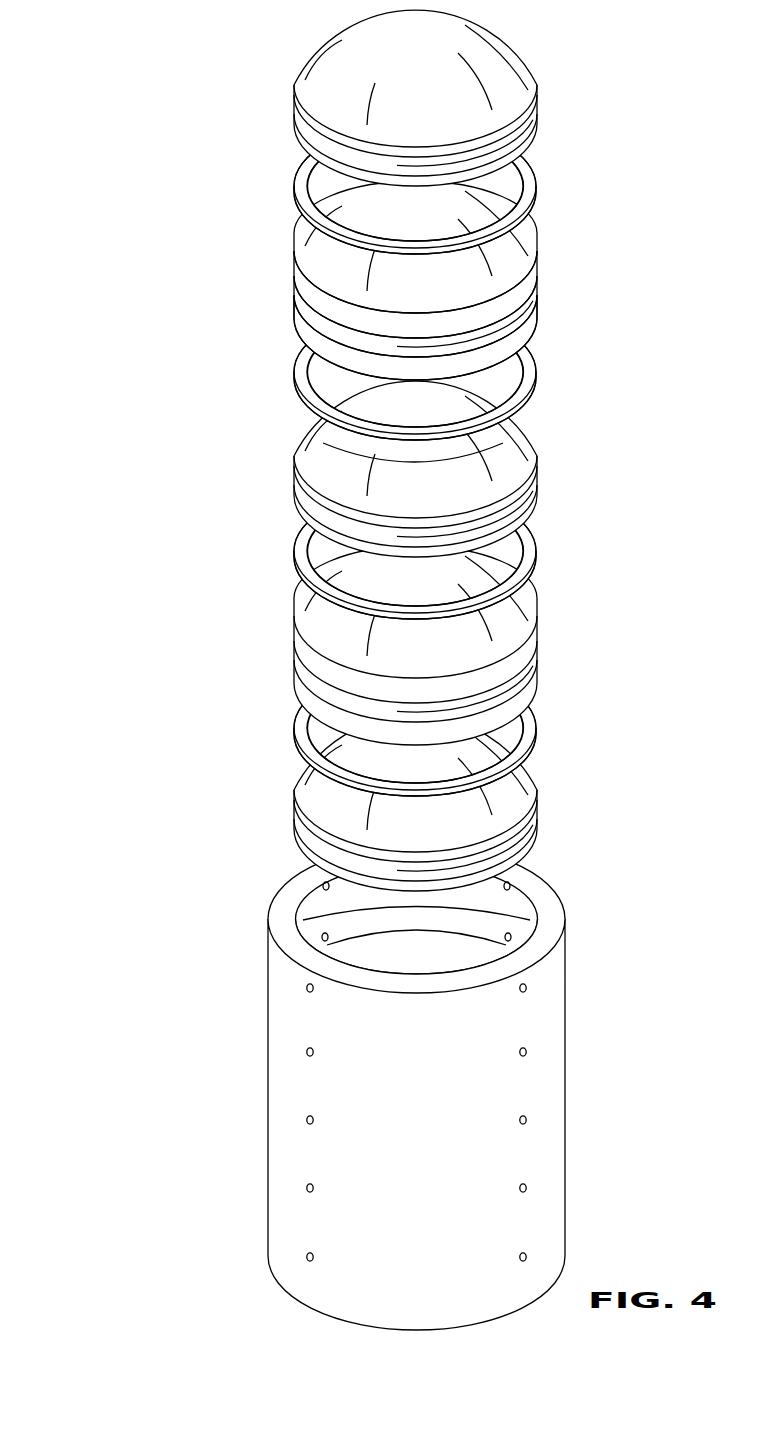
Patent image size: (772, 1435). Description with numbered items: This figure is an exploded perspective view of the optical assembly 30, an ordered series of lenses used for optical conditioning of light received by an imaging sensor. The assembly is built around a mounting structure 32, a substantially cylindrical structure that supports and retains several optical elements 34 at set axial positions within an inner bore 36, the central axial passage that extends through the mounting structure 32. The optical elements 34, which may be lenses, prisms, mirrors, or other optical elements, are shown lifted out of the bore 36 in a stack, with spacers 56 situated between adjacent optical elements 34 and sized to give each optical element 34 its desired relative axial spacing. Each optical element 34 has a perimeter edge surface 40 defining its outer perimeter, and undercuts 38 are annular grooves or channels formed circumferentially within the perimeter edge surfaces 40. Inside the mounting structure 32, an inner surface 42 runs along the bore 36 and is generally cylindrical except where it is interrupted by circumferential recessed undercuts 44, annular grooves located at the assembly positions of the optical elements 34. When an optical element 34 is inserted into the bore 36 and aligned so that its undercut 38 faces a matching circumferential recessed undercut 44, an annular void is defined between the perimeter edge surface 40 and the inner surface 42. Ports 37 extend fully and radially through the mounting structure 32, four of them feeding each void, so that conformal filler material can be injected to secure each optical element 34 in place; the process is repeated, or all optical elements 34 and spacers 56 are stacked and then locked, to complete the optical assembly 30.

The optical assembly 30 is at (363, 670).
The mounting structure 32 is at (411, 1022).
The optical elements 34 is at (617, 786).
The inner bore 36 is at (396, 963).
The ports 37 is at (528, 1260).
The undercuts 38 is at (617, 674).
The perimeter edge surface 40 is at (300, 637).
The inner surface 42 is at (412, 948).
The circumferential recessed undercuts 44 is at (352, 933).
The spacers 56 is at (298, 746).